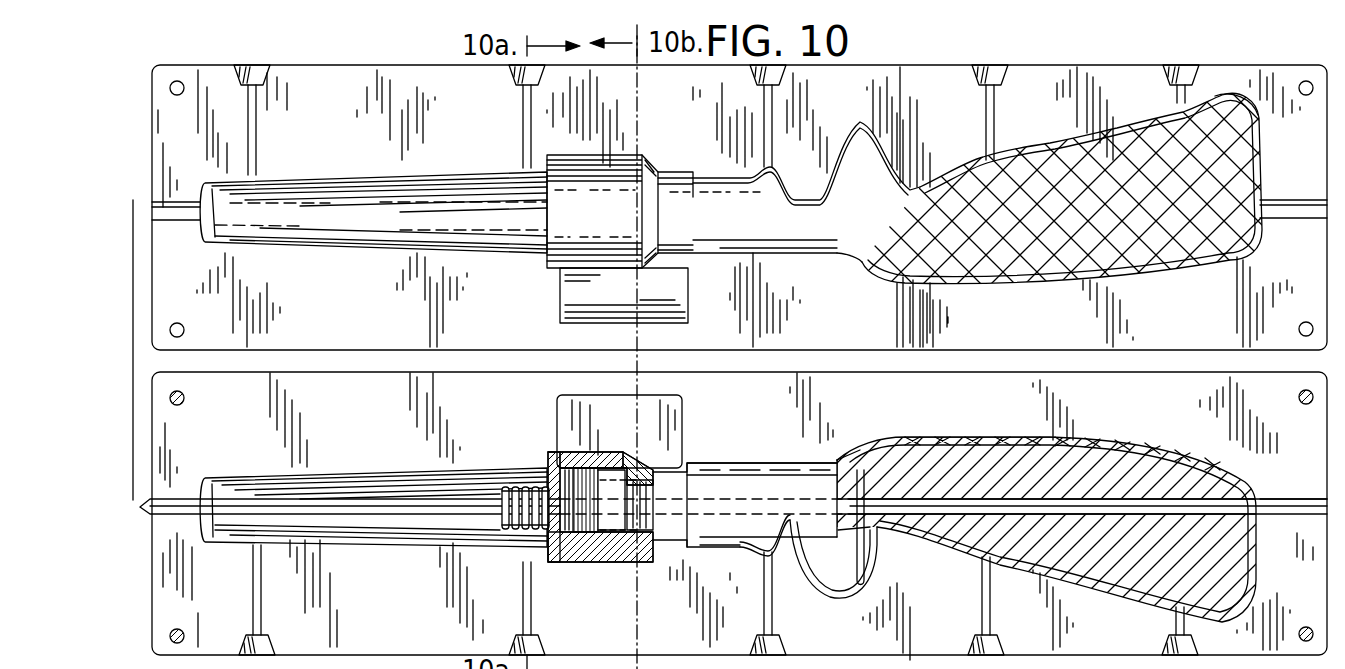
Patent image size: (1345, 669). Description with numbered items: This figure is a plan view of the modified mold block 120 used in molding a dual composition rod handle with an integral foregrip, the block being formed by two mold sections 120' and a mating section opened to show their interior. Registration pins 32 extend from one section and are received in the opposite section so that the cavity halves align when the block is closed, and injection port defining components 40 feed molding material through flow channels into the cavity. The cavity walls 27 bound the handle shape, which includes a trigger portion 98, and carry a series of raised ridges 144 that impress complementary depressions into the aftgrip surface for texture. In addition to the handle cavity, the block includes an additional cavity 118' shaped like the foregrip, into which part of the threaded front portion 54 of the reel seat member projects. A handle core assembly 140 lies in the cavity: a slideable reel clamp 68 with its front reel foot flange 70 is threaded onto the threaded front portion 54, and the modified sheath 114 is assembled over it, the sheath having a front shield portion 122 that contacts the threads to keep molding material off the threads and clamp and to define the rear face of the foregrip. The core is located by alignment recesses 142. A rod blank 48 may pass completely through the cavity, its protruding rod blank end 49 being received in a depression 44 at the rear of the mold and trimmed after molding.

The cavity wall 27 is at (1055, 148).
The pin 32 is at (177, 96).
The injection port defining component 40 is at (257, 128).
The depression 44 is at (172, 218).
The rod blank 48 is at (140, 507).
The rod blank end 49 is at (1302, 499).
The threaded front portion 54 is at (518, 540).
The reel clamp 68 is at (615, 560).
The front reel foot flange 70 is at (640, 466).
The trigger portion 98 is at (848, 585).
The modified sheath 114 is at (540, 270).
The cavity 118' is at (373, 198).
The mold block 120 is at (119, 350).
The mold section 120' is at (739, 207).
The shield portion 122 is at (546, 455).
The handle core assembly 140 is at (737, 455).
The alignment recess 142 is at (558, 318).
The raised ridge 144 is at (1232, 95).